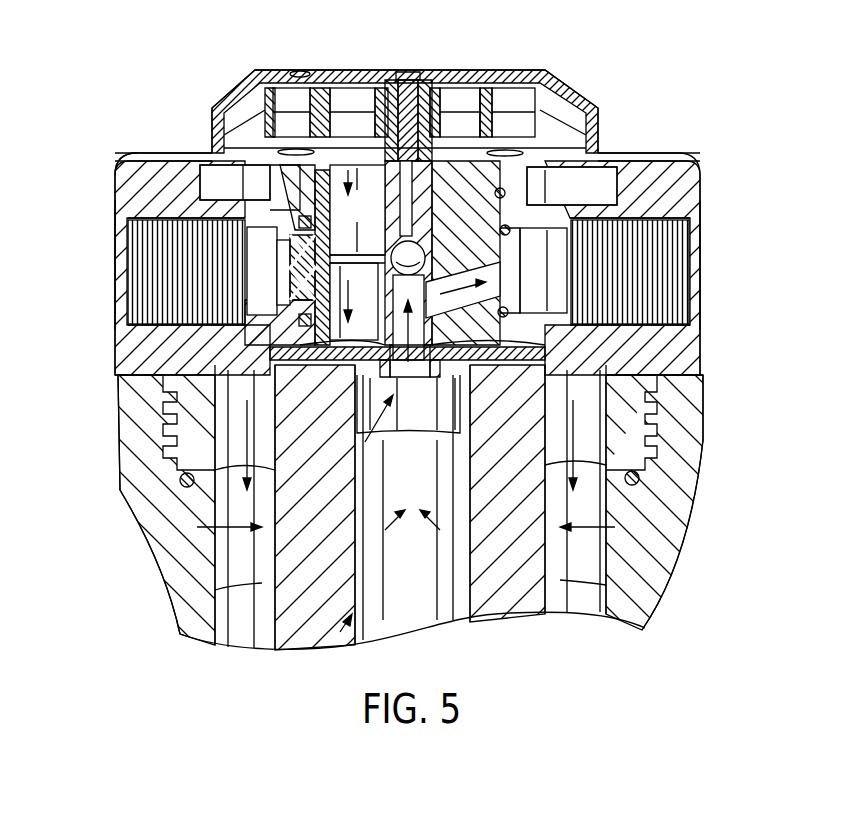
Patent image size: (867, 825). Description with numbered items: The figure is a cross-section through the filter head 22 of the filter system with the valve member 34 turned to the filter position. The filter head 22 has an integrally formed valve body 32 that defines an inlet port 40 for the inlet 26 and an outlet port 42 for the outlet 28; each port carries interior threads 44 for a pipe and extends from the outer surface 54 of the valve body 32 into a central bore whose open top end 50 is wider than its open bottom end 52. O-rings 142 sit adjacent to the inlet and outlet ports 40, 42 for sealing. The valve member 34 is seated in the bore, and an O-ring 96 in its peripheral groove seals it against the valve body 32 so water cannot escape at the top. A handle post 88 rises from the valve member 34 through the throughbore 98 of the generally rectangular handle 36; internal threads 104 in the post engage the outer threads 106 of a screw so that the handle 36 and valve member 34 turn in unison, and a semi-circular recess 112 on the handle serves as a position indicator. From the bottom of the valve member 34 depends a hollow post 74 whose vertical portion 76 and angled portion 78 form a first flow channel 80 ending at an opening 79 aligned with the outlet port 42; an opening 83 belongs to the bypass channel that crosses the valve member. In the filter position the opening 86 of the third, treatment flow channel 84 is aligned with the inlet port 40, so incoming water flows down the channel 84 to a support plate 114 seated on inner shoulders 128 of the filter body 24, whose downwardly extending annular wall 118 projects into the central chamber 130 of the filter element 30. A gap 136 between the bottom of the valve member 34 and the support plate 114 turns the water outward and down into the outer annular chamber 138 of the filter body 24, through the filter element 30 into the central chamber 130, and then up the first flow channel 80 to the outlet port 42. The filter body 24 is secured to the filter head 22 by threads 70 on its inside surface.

The filter head 22 is at (660, 85).
The filter body 24 is at (675, 575).
The inlet 26 is at (84, 236).
The outlet 28 is at (738, 253).
The filter element 30 is at (512, 612).
The valve body 32 is at (113, 182).
The valve member 34 is at (500, 152).
The handle 36 is at (470, 80).
The inlet port 40 is at (130, 153).
The outlet port 42 is at (700, 162).
The threads 44 is at (160, 300).
The open top end 50 is at (350, 168).
The open bottom end 52 is at (408, 425).
The outer surface 54 is at (117, 207).
The threads 70 is at (162, 442).
The depending post 74 is at (410, 400).
The vertical portion 76 is at (384, 276).
The angled portion 78 is at (490, 272).
The opening 79 is at (531, 252).
The first flow channel 80 is at (418, 316).
The opening 83 is at (418, 220).
The third treatment flow channel 84 is at (310, 286).
The opening 86 is at (312, 268).
The handle post 88 is at (390, 96).
The O-ring 96 is at (322, 196).
The throughbore 98 is at (450, 84).
The internal threads 104 is at (401, 78).
The outer threads 106 is at (434, 113).
The semi-circular recess 112 is at (298, 71).
The support plate 114 is at (256, 390).
The annular wall 118 is at (458, 432).
The inner shoulders 128 is at (604, 380).
The central chamber 130 is at (360, 638).
The gap 136 is at (305, 347).
The outer annular chamber 138 is at (230, 575).
The O-rings 142 is at (549, 190).